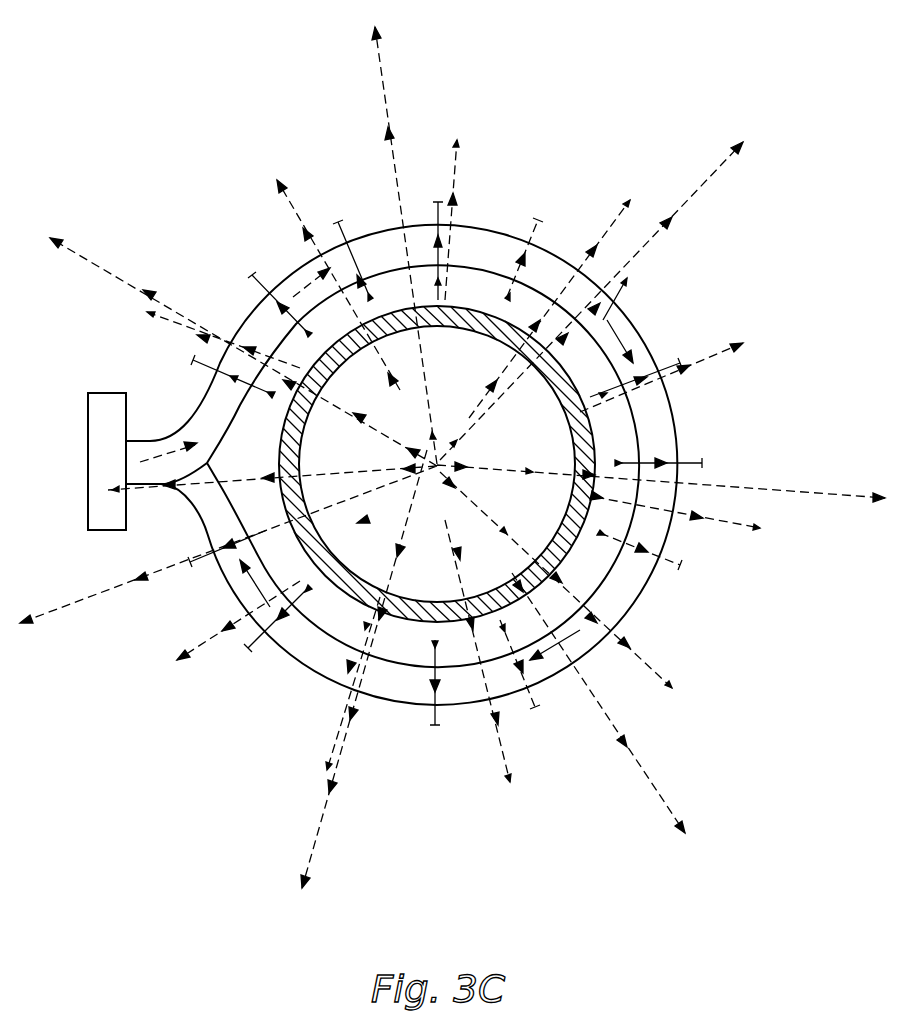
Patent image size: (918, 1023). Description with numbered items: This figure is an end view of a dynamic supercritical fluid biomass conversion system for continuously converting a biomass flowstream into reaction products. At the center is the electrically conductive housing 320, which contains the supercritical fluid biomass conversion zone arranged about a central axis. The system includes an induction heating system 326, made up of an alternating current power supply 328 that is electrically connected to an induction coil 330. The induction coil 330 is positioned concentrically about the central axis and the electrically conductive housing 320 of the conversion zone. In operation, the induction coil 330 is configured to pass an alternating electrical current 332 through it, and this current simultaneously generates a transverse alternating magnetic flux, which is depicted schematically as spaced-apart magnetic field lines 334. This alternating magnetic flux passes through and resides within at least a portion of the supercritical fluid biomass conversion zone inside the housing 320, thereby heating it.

The electrically conductive housing 320 is at (595, 438).
The induction heating system 326 is at (74, 431).
The alternating current power supply 328 is at (98, 505).
The induction coil 330 is at (460, 705).
The alternating electrical current 332 is at (302, 285).
The magnetic field lines 334 is at (633, 262).